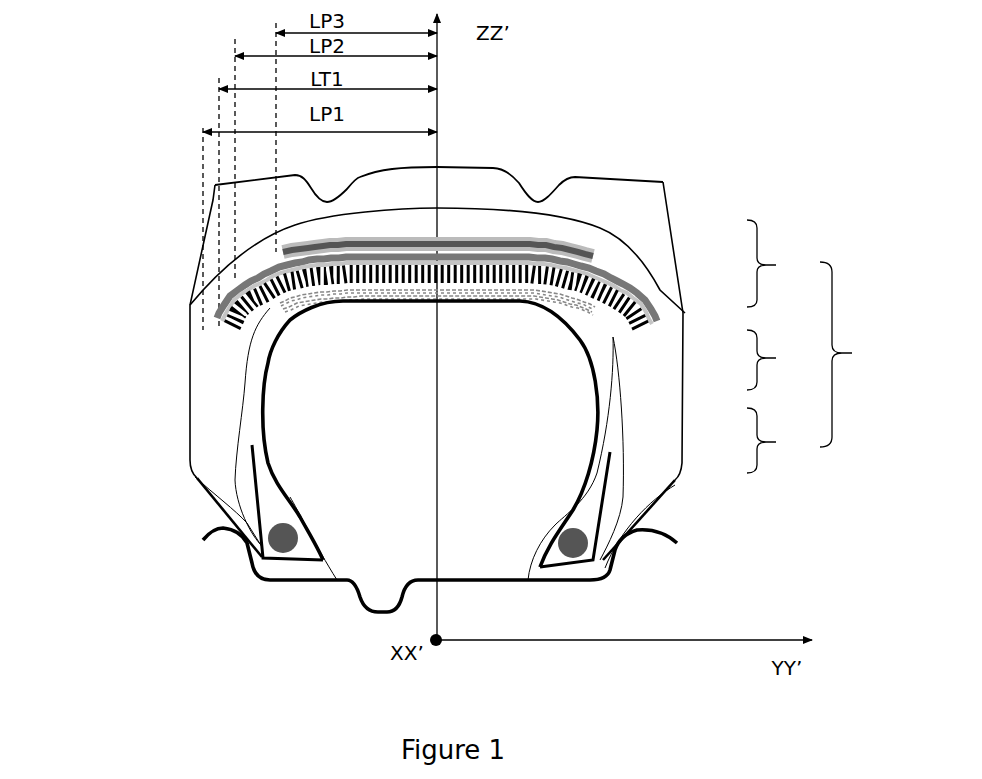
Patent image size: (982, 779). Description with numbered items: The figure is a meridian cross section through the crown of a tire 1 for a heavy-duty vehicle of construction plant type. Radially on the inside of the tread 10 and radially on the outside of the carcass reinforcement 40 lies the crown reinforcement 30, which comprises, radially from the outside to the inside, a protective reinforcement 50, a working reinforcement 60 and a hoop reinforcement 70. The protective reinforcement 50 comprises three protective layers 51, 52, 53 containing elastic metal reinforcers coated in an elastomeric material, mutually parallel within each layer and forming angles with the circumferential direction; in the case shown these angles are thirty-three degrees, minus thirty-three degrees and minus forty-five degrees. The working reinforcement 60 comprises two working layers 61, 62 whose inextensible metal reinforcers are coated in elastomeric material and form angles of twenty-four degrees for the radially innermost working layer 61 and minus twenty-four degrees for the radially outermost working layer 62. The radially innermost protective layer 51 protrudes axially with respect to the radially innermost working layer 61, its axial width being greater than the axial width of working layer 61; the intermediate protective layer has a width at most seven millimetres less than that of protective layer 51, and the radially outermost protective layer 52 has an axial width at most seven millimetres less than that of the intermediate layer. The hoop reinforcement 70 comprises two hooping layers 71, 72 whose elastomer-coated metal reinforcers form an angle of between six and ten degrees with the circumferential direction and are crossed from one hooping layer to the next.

The tire 1 is at (207, 258).
The tread 10 is at (643, 212).
The crown reinforcement 30 is at (550, 346).
The carcass reinforcement 40 is at (565, 323).
The protective reinforcement 50 is at (511, 274).
The radially innermost protective layer 51 is at (630, 288).
The radially outermost protective layer 52 is at (600, 247).
The protective layer 53 is at (630, 270).
The working reinforcement 60 is at (543, 341).
The radially innermost working layer 61 is at (583, 298).
The radially outermost working layer 62 is at (590, 303).
The hoop reinforcement 70 is at (543, 384).
The hooping layer 71 is at (594, 307).
The hooping layer 72 is at (592, 313).